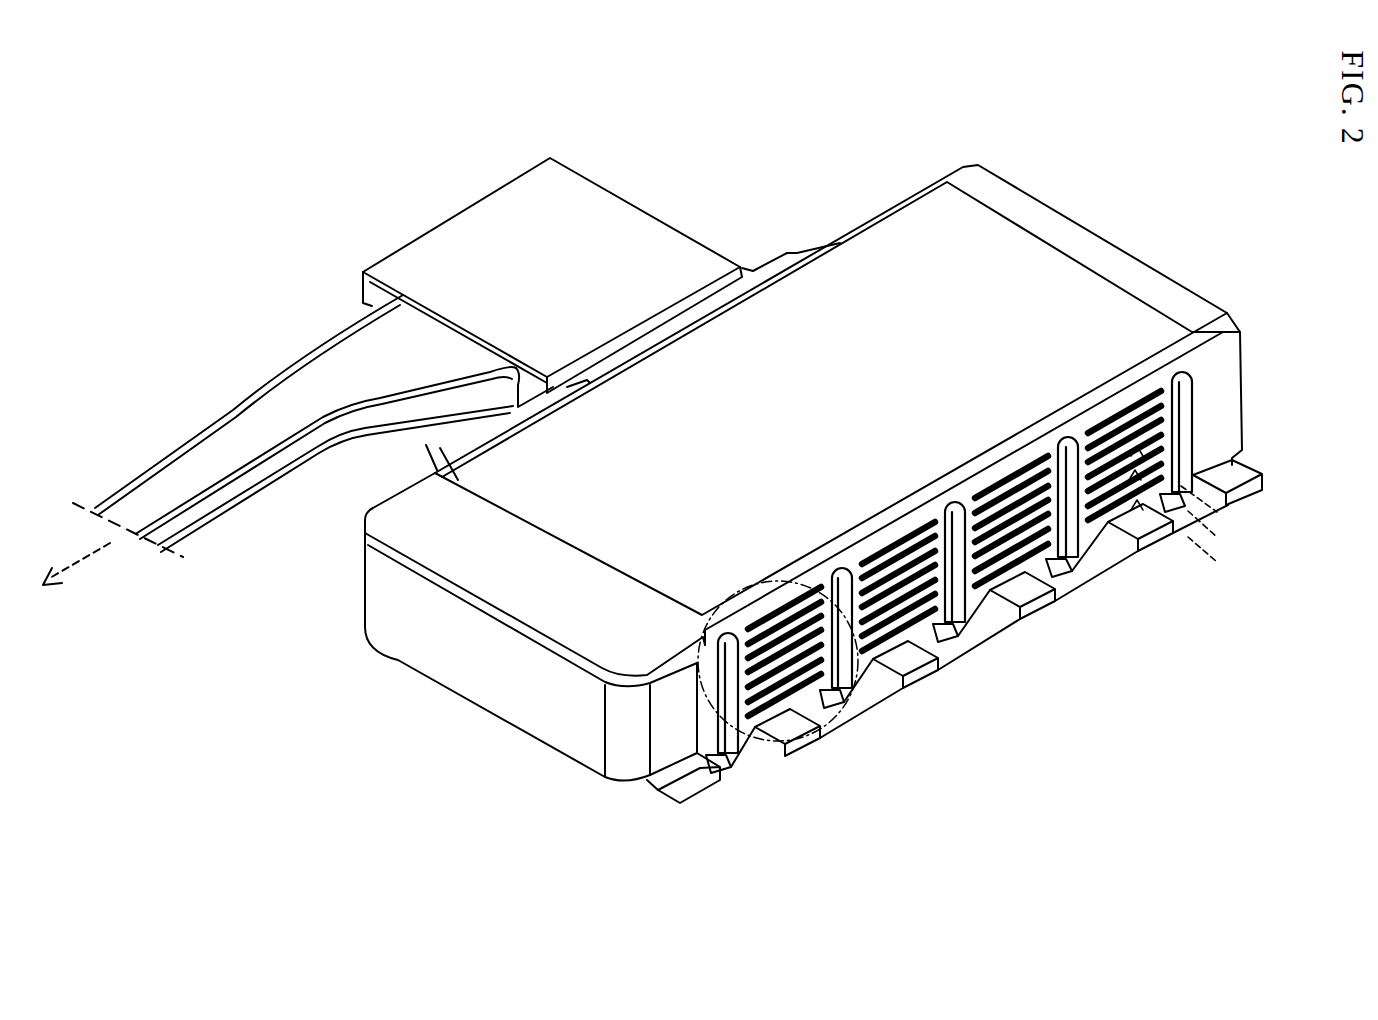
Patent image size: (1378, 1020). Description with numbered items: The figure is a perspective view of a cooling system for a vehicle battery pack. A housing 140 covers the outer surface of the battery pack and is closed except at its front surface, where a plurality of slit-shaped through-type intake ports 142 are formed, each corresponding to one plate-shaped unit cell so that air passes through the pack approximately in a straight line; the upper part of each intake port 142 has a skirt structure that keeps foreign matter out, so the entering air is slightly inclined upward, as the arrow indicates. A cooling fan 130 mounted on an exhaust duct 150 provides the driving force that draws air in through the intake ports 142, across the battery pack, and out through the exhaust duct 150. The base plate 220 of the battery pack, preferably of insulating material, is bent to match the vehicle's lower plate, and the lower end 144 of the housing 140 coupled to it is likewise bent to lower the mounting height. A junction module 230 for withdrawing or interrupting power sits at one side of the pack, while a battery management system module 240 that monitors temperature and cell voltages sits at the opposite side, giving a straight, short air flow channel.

The cooling fan 130 is at (578, 197).
The housing 140 is at (905, 222).
The intake ports 142 is at (923, 520).
The lower end 144 is at (1050, 605).
The exhaust duct 150 is at (305, 348).
The base plate 220 is at (920, 673).
The junction module 230 is at (487, 685).
The battery management system (BMS) module 240 is at (1110, 266).